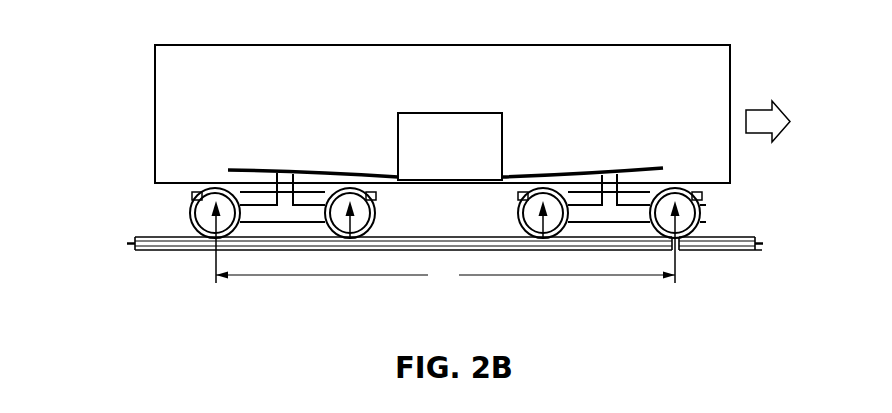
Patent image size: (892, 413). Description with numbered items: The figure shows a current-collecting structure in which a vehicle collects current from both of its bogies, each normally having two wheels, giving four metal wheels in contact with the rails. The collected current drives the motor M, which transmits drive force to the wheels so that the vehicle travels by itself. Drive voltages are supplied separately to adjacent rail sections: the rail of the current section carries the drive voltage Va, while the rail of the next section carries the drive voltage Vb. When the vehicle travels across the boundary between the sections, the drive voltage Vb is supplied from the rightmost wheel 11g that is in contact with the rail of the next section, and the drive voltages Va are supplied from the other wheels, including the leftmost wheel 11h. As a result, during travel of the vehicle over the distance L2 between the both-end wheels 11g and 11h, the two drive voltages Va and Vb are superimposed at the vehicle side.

The leftmost wheel 11h is at (208, 201).
The rightmost wheel 11g is at (700, 207).
The motor M is at (450, 146).
The drive voltage Va is at (383, 243).
The drive voltage Vb is at (735, 243).
The distance L2 is at (445, 275).